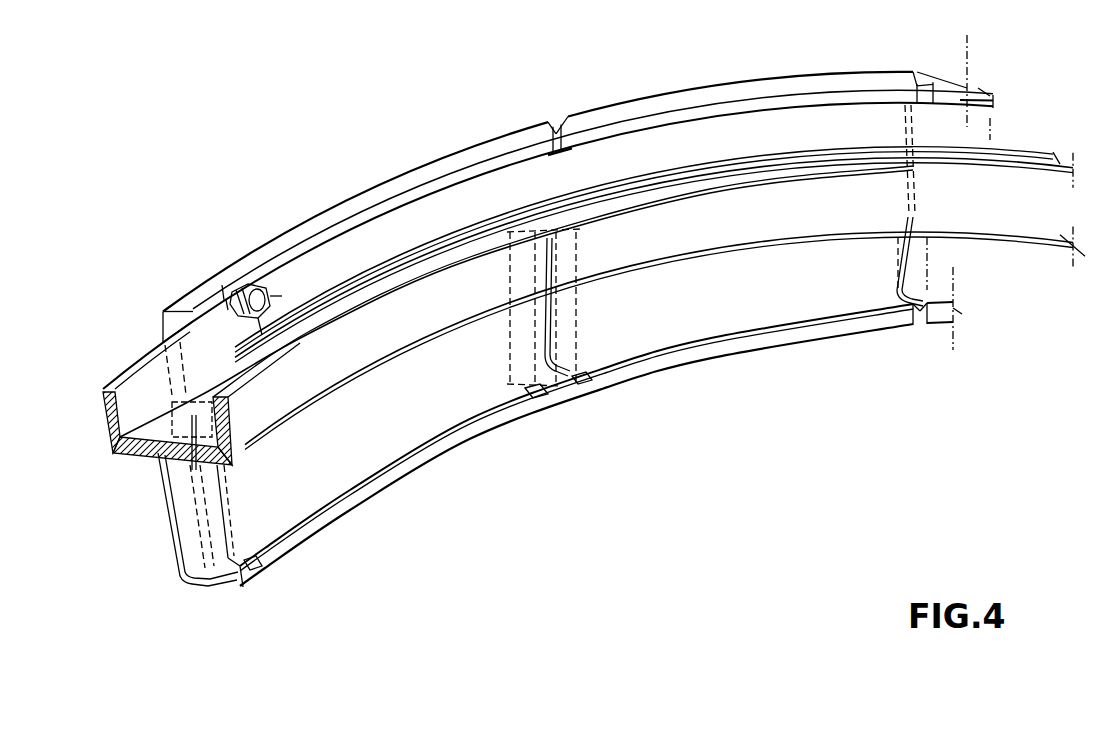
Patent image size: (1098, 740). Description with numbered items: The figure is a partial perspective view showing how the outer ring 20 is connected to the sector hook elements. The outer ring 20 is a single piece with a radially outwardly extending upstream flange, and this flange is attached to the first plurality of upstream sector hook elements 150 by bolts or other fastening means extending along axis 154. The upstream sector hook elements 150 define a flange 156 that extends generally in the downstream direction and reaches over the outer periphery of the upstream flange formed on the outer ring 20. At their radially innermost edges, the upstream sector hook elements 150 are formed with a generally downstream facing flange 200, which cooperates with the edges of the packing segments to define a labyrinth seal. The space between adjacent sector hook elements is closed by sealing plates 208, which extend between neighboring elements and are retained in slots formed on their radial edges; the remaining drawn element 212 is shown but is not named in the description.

The curved channel member 20 is at (162, 458).
The rail end joint 150 is at (163, 311).
The bolt and nut 154 is at (327, 290).
The top rail 156 is at (358, 226).
The lower guide band 200 is at (345, 494).
The hanger bracket 208 is at (193, 563).
The clamp 212 is at (568, 398).